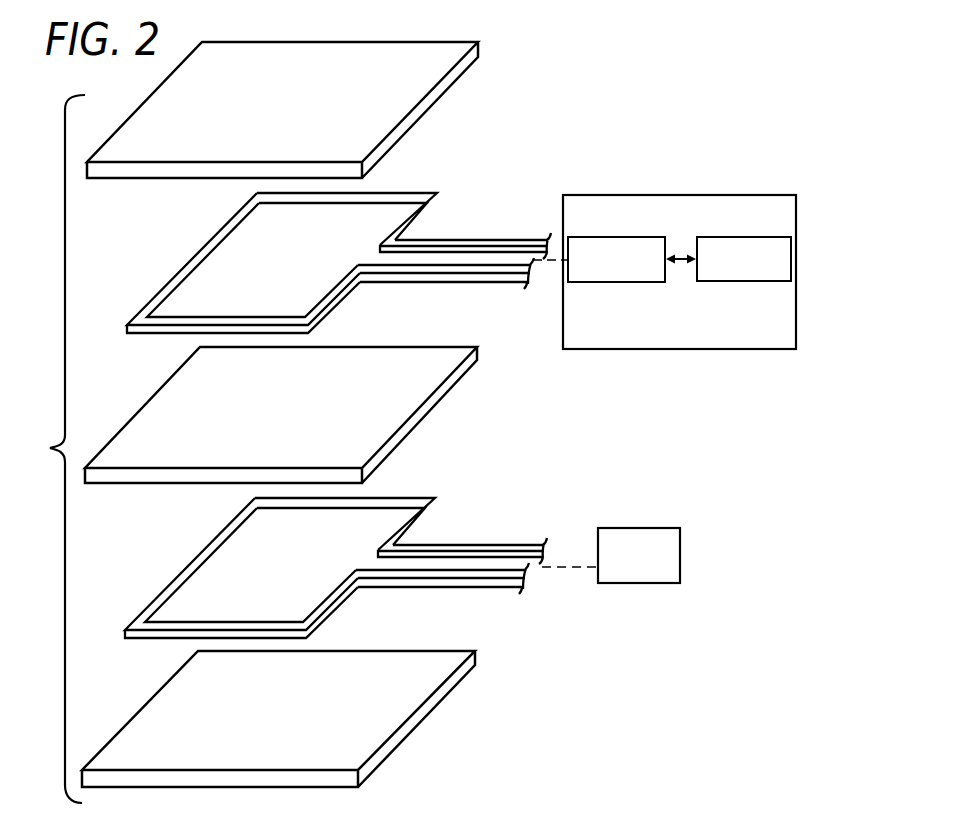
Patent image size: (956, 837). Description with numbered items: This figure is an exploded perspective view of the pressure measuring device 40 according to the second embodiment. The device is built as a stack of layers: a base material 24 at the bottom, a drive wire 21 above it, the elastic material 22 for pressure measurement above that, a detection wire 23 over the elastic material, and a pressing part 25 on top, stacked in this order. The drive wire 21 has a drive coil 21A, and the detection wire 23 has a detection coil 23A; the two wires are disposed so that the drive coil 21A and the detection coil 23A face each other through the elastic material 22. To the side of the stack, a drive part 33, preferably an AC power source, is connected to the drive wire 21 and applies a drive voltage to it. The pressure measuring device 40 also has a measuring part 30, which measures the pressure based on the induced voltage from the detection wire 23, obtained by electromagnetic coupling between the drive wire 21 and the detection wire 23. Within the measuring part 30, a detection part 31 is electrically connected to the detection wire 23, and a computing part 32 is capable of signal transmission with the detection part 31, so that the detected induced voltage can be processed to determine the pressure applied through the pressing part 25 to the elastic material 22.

The pressure measuring device 40 is at (50, 448).
The pressing part 25 is at (480, 57).
The detection wire 23 is at (347, 237).
The detection coil 23A is at (403, 192).
The elastic material for pressure measurement 22 is at (452, 382).
The drive wire 21 is at (361, 549).
The drive coil 21A is at (312, 549).
The base material 24 is at (442, 707).
The measuring part 30 is at (679, 312).
The detection part 31 is at (612, 283).
The computing part 32 is at (732, 281).
The drive part 33 is at (623, 583).